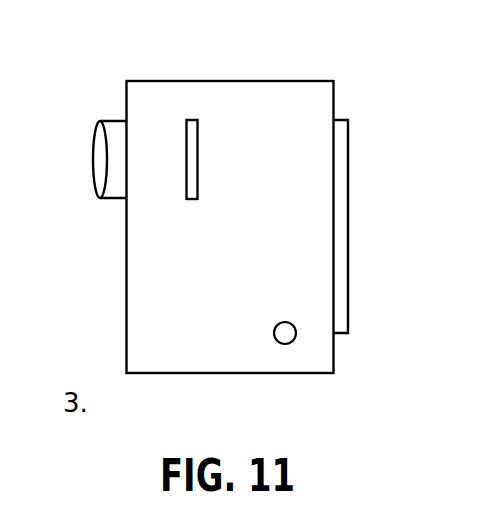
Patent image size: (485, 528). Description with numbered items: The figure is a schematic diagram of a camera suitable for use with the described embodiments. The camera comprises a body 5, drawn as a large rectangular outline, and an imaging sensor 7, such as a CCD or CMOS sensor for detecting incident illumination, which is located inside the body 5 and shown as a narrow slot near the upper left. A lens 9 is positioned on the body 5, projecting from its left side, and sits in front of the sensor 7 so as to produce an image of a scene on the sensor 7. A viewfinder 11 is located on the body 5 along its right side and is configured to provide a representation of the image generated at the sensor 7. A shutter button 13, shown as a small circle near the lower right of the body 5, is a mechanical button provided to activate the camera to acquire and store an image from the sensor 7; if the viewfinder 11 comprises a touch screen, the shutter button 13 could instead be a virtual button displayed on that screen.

The body 5 is at (288, 80).
The imaging sensor 7 is at (196, 119).
The lens 9 is at (93, 135).
The viewfinder 11 is at (348, 147).
The shutter button 13 is at (285, 334).